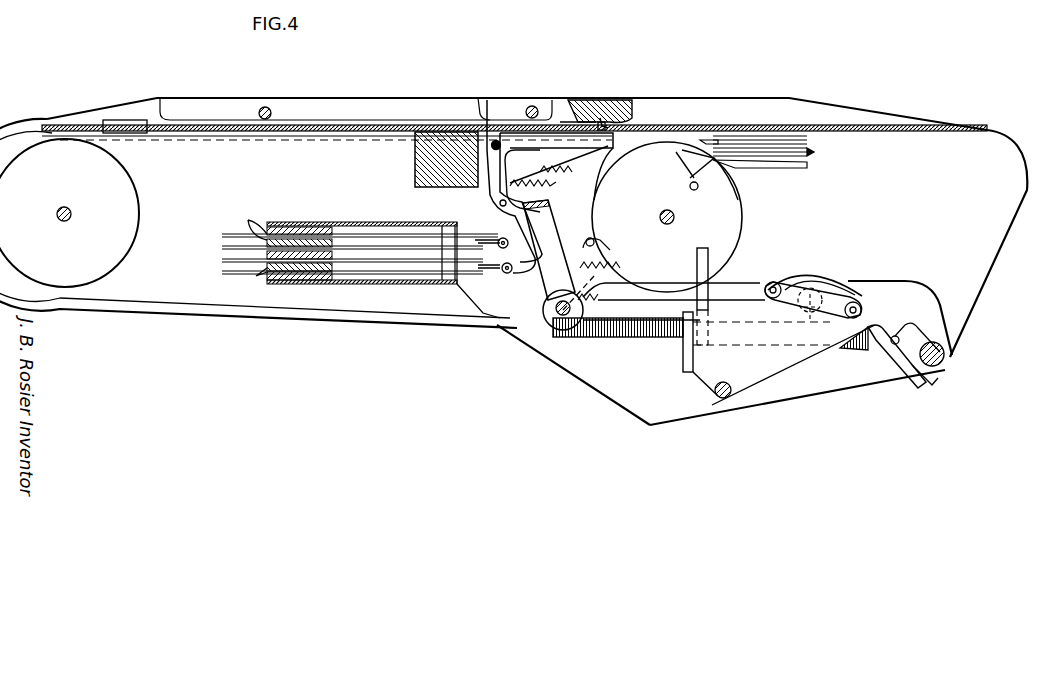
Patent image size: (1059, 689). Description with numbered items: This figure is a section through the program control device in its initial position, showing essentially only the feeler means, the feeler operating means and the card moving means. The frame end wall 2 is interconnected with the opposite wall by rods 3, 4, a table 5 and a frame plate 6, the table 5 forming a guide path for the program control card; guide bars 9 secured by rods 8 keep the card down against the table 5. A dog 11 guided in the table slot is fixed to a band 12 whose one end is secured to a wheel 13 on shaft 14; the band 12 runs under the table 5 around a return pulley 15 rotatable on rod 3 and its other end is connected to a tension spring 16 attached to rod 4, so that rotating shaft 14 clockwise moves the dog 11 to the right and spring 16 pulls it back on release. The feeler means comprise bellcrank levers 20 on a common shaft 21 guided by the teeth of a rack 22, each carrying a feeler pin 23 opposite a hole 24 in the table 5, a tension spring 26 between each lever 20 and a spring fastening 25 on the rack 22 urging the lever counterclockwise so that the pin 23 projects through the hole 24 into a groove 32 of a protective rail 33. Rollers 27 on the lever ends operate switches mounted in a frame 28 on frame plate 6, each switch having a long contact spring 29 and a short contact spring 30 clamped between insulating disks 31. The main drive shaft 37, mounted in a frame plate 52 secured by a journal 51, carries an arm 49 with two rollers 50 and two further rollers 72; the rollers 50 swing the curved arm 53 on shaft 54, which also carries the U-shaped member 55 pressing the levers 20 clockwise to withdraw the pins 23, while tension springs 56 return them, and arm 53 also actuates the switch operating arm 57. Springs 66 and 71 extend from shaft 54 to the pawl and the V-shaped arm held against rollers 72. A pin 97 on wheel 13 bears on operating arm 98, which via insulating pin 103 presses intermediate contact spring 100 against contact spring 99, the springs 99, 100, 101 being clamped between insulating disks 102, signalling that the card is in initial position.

The frame end wall 2 is at (838, 108).
The rod 3 is at (72, 209).
The rod 4 is at (944, 366).
The table 5 is at (162, 122).
The frame plate 6 is at (303, 287).
The rod 8 is at (268, 108).
The guide bar 9 is at (392, 108).
The dog 11 is at (122, 120).
The band 12 is at (205, 142).
The wheel 13 is at (736, 217).
The shaft 14 is at (660, 217).
The return pulley 15 is at (132, 206).
The tension spring 16 is at (637, 340).
The bellcrank lever 20 is at (500, 198).
The shaft 21 is at (495, 140).
The rack 22 is at (412, 168).
The feeler pin 23 is at (608, 100).
The hole 24 is at (608, 125).
The spring fastening 25 is at (560, 160).
The tension spring 26 is at (540, 184).
The roller 27 is at (505, 240).
The frame 28 is at (305, 222).
The long contact spring 29 is at (385, 237).
The short contact spring 30 is at (422, 262).
The insulating disk 31 is at (250, 222).
The groove 32 is at (598, 120).
The protective rail 33 is at (560, 120).
The main drive shaft 37 is at (838, 342).
The arm 49 is at (875, 340).
The roller 50 is at (862, 295).
The journal 51 is at (724, 398).
The frame plate 52 is at (792, 385).
The arm 53 is at (752, 287).
The shaft 54 is at (570, 330).
The U-shaped member 55 is at (552, 216).
The tension spring 56 is at (600, 243).
The operating arm 57 is at (696, 252).
The tension spring 66 is at (592, 316).
The tension spring 71 is at (585, 291).
The roller 72 is at (790, 284).
The pin 97 is at (698, 188).
The operating arm 98 is at (735, 180).
The contact spring 99 is at (728, 136).
The intermediate contact spring 100 is at (755, 144).
The contact spring 101 is at (780, 150).
The insulating disk 102 is at (782, 154).
The insulating pin 103 is at (710, 136).